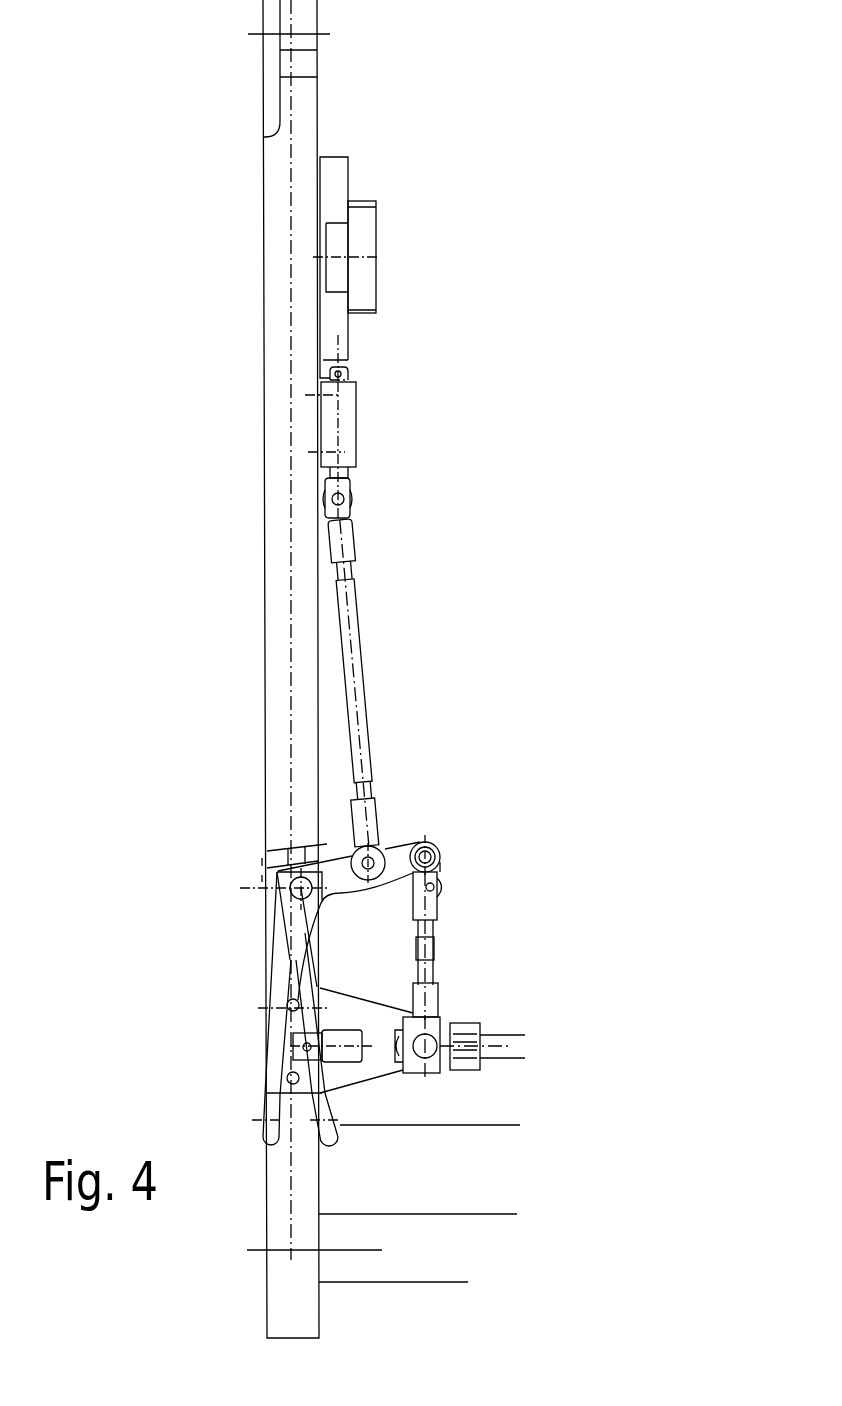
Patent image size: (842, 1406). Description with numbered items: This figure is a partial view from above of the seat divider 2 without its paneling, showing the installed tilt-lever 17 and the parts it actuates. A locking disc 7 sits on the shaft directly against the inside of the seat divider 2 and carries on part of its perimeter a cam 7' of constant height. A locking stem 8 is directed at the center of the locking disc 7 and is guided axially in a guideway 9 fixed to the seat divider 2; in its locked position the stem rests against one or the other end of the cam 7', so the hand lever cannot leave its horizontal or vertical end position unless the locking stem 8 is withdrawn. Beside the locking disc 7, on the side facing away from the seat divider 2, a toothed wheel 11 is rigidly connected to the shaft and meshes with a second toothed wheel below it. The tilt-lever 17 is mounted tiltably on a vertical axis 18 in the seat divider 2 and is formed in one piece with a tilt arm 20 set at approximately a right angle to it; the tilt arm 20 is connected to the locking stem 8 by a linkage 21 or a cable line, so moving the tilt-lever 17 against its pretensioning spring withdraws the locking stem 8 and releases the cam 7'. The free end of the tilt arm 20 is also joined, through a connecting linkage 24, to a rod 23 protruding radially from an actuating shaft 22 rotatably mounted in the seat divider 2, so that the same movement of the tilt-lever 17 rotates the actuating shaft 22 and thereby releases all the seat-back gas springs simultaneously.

The seat divider 2 is at (283, 455).
The locking disc 7 is at (397, 240).
The cam 7' is at (402, 347).
The locking stem 8 is at (350, 375).
The guideway 9 is at (350, 443).
The toothed wheel 11 is at (360, 230).
The tilt-lever 17 is at (293, 1030).
The vertical axis 18 is at (283, 902).
The tilt arm 20 is at (395, 845).
The linkage 21 is at (358, 647).
The actuating shaft 22 is at (517, 1045).
The rod 23 is at (445, 1023).
The connecting linkage 24 is at (435, 947).